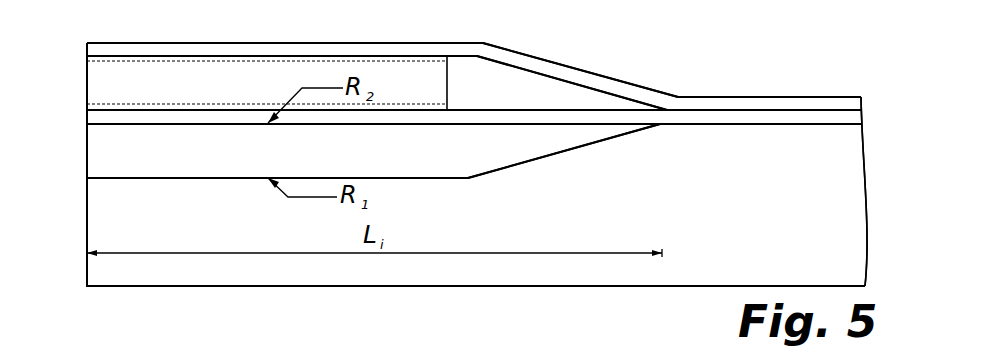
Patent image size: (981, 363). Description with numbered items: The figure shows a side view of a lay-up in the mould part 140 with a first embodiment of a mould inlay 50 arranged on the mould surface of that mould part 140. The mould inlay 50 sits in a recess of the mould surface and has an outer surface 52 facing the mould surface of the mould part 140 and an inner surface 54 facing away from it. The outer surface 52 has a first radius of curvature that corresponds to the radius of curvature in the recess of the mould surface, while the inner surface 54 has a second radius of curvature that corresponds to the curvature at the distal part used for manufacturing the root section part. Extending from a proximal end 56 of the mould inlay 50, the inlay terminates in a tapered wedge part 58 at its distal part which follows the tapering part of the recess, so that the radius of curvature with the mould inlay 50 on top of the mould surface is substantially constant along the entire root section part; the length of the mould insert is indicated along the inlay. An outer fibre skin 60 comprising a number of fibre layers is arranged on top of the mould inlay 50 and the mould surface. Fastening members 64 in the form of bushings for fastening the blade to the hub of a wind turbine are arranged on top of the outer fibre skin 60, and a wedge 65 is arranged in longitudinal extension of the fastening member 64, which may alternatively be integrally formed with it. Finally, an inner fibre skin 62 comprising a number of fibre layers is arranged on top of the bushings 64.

The mould inlay 50 is at (97, 161).
The outer surface of mould inlay 52 is at (167, 178).
The inner surface of mould inlay 54 is at (490, 124).
The proximal end of mould inlay 56 is at (86, 138).
The tapered wedge part 58 is at (572, 152).
The outer fibre skin 60 is at (861, 117).
The inner fibre skin 62 is at (862, 98).
The fastening member 64 is at (237, 74).
The wedge 65 is at (477, 63).
The first mould part 140 is at (725, 250).